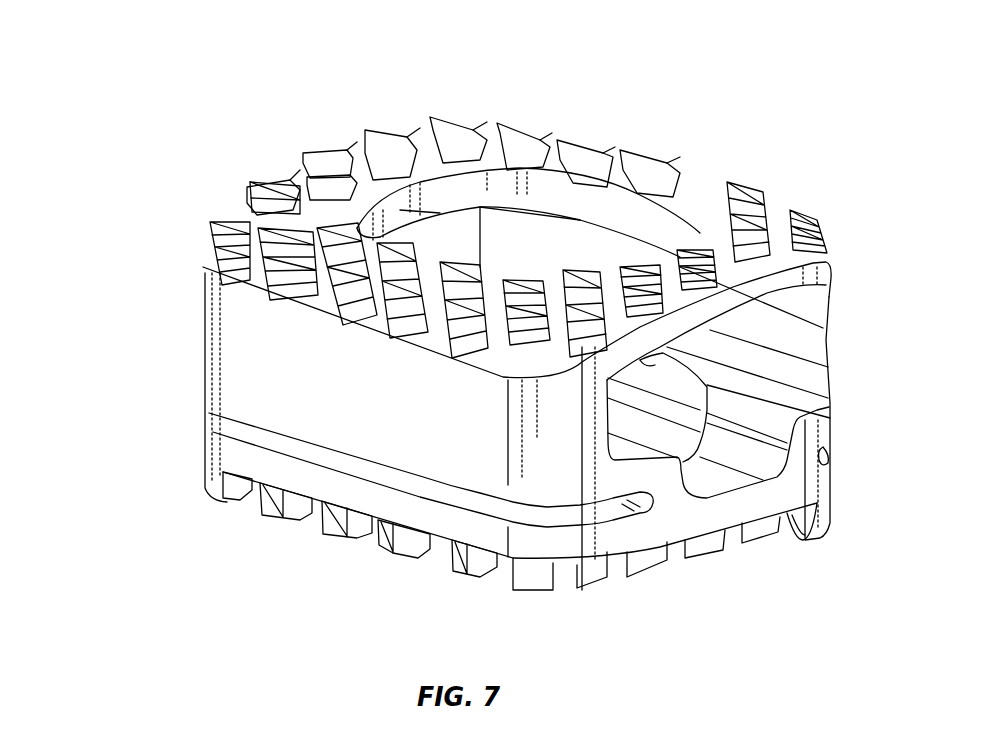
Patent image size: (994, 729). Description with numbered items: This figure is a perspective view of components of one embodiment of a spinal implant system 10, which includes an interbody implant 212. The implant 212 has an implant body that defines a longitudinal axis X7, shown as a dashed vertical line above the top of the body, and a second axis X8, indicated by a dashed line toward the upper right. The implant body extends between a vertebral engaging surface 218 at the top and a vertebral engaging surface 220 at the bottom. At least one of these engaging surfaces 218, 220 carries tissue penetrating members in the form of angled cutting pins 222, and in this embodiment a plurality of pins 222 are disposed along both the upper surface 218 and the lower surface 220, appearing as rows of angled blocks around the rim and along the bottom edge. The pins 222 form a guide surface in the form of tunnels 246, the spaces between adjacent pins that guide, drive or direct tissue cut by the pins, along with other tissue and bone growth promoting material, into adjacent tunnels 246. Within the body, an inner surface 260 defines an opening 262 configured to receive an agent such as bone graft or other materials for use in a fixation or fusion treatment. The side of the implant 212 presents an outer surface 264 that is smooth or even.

The spinal implant system 10 is at (875, 43).
The interbody implant 212 is at (146, 235).
The vertebral engaging surface 218 is at (723, 253).
The vertebral engaging surface 220 is at (792, 533).
The angled cutting pin 222 is at (205, 262).
The tunnel 246 is at (288, 166).
The inner surface 260 is at (399, 208).
The opening 262 is at (461, 238).
The outer surface 264 is at (290, 365).
The longitudinal axis X7 is at (520, 240).
The axis X8 is at (697, 167).